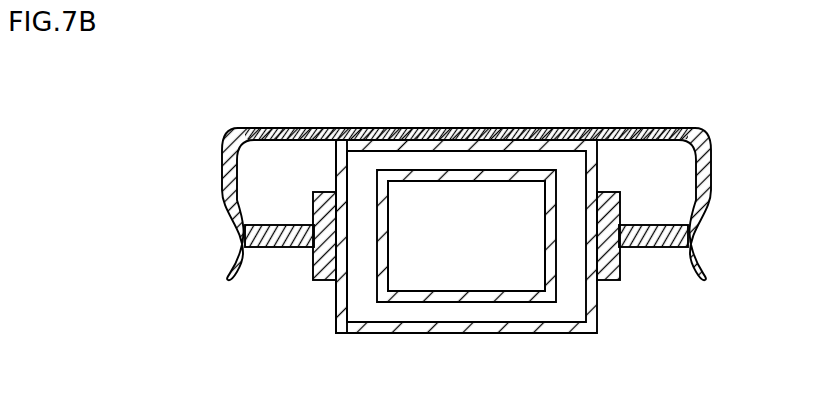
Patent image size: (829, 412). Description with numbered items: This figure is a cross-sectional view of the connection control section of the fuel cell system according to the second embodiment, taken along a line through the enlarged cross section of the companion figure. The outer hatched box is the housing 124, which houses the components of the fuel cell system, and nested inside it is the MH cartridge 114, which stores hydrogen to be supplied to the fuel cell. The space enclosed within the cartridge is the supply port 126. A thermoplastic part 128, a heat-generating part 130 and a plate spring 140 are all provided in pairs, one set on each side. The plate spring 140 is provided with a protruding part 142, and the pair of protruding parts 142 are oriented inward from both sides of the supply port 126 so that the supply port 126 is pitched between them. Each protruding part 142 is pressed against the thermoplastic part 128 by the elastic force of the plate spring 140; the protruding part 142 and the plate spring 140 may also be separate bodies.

The MH cartridge 114 is at (490, 178).
The housing 124 is at (445, 327).
The supply port 126 is at (493, 240).
The thermoplastic part 128 is at (339, 217).
The heat-generating part 130 is at (312, 208).
The plate spring 140 is at (643, 128).
The protruding part 142 is at (291, 240).